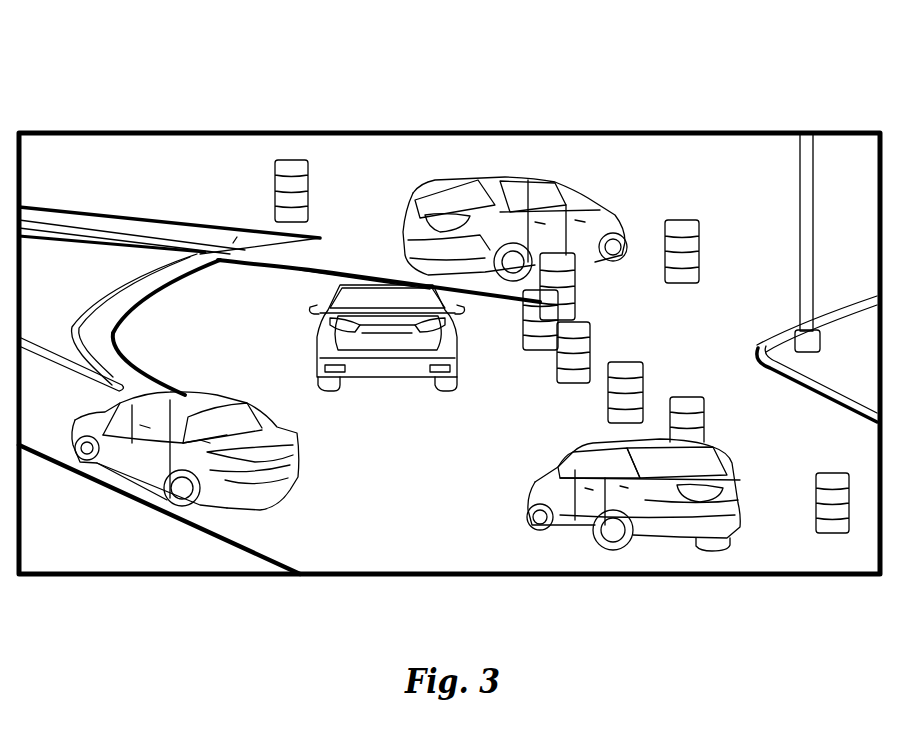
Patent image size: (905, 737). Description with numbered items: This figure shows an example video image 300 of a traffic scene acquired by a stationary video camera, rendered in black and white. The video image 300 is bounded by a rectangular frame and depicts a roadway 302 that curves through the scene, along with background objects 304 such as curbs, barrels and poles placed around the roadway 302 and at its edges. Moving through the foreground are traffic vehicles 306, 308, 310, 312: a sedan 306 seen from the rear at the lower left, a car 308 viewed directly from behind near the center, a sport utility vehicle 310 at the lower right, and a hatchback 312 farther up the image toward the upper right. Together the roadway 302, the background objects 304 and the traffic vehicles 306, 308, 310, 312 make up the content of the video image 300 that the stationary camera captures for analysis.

The video image 300 is at (473, 37).
The roadway 302 is at (374, 548).
The background objects 304 is at (152, 162).
The traffic vehicle 306 is at (137, 483).
The traffic vehicle 308 is at (457, 370).
The traffic vehicle 310 is at (742, 487).
The traffic vehicle 312 is at (595, 205).